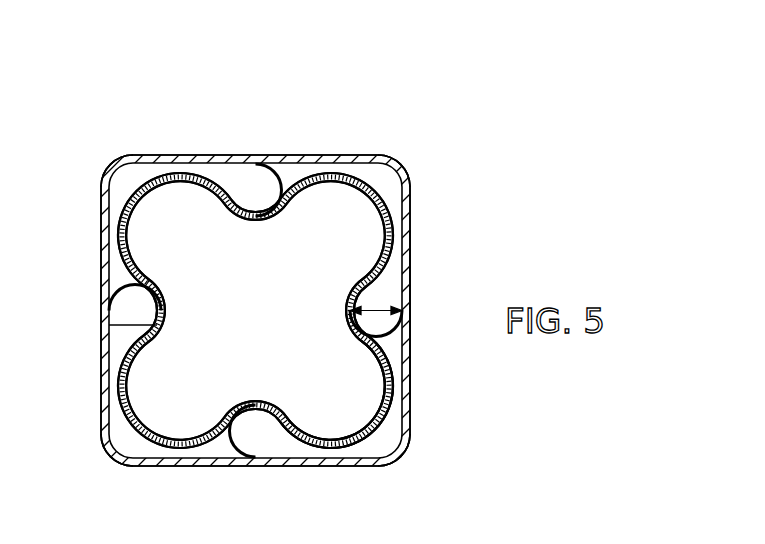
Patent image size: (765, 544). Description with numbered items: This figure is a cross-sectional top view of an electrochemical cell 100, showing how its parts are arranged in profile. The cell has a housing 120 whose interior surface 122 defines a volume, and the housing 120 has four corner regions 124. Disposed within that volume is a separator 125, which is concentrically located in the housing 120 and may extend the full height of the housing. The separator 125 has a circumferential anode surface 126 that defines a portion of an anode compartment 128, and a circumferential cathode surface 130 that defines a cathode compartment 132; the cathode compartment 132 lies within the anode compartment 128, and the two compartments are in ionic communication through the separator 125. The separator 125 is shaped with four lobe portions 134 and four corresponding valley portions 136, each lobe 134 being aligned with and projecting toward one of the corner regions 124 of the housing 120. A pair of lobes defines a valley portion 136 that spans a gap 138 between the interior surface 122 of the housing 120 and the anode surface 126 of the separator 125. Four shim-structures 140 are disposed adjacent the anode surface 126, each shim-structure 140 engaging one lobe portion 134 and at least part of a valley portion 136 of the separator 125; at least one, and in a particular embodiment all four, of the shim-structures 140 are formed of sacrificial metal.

The electrochemical cell 100 is at (442, 61).
The housing 120 is at (320, 157).
The interior surface 122 is at (393, 265).
The corner regions 124 is at (114, 165).
The separator 125 is at (355, 178).
The anode surface 126 is at (375, 398).
The anode compartment 128 is at (206, 249).
The cathode surface 130 is at (390, 373).
The cathode compartment 132 is at (135, 305).
The lobe portions 134 is at (118, 205).
The valley portions 136 is at (262, 222).
The gap 138 is at (380, 303).
The shim-structures 140 is at (299, 203).